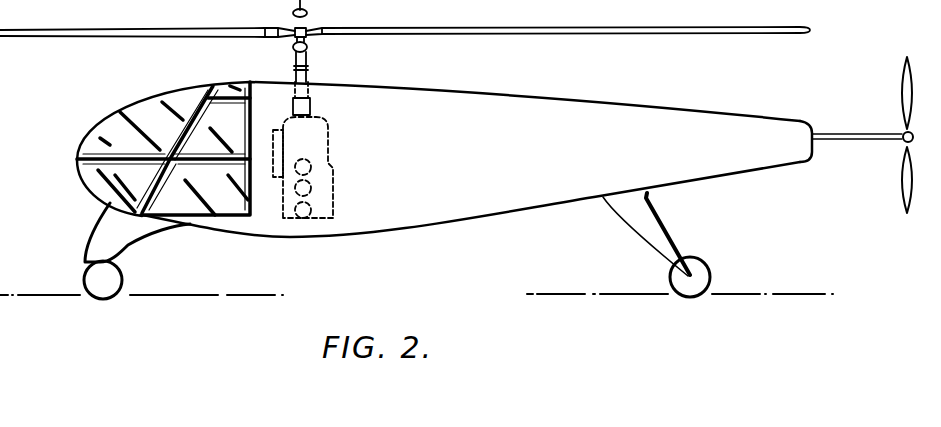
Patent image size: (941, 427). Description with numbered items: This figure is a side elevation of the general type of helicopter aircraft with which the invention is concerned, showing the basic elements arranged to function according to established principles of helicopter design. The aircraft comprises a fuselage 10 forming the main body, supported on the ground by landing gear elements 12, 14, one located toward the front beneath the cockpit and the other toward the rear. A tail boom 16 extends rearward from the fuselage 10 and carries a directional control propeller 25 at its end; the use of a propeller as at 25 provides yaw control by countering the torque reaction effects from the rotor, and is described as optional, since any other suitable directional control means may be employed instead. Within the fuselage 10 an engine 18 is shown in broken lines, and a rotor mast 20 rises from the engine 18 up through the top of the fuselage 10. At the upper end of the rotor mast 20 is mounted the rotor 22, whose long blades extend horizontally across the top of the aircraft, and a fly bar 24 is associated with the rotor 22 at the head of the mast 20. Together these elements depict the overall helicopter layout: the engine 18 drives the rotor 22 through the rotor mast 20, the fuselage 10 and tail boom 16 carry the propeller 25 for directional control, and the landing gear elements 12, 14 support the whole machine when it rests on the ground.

The fuselage 10 is at (438, 159).
The landing gear element 12 is at (125, 280).
The landing gear element 14 is at (708, 276).
The tail boom 16 is at (731, 132).
The engine 18 is at (329, 160).
The rotor mast 20 is at (303, 63).
The rotor 22 is at (436, 28).
The fly bar 24 is at (294, 48).
The directional control propeller 25 is at (900, 86).